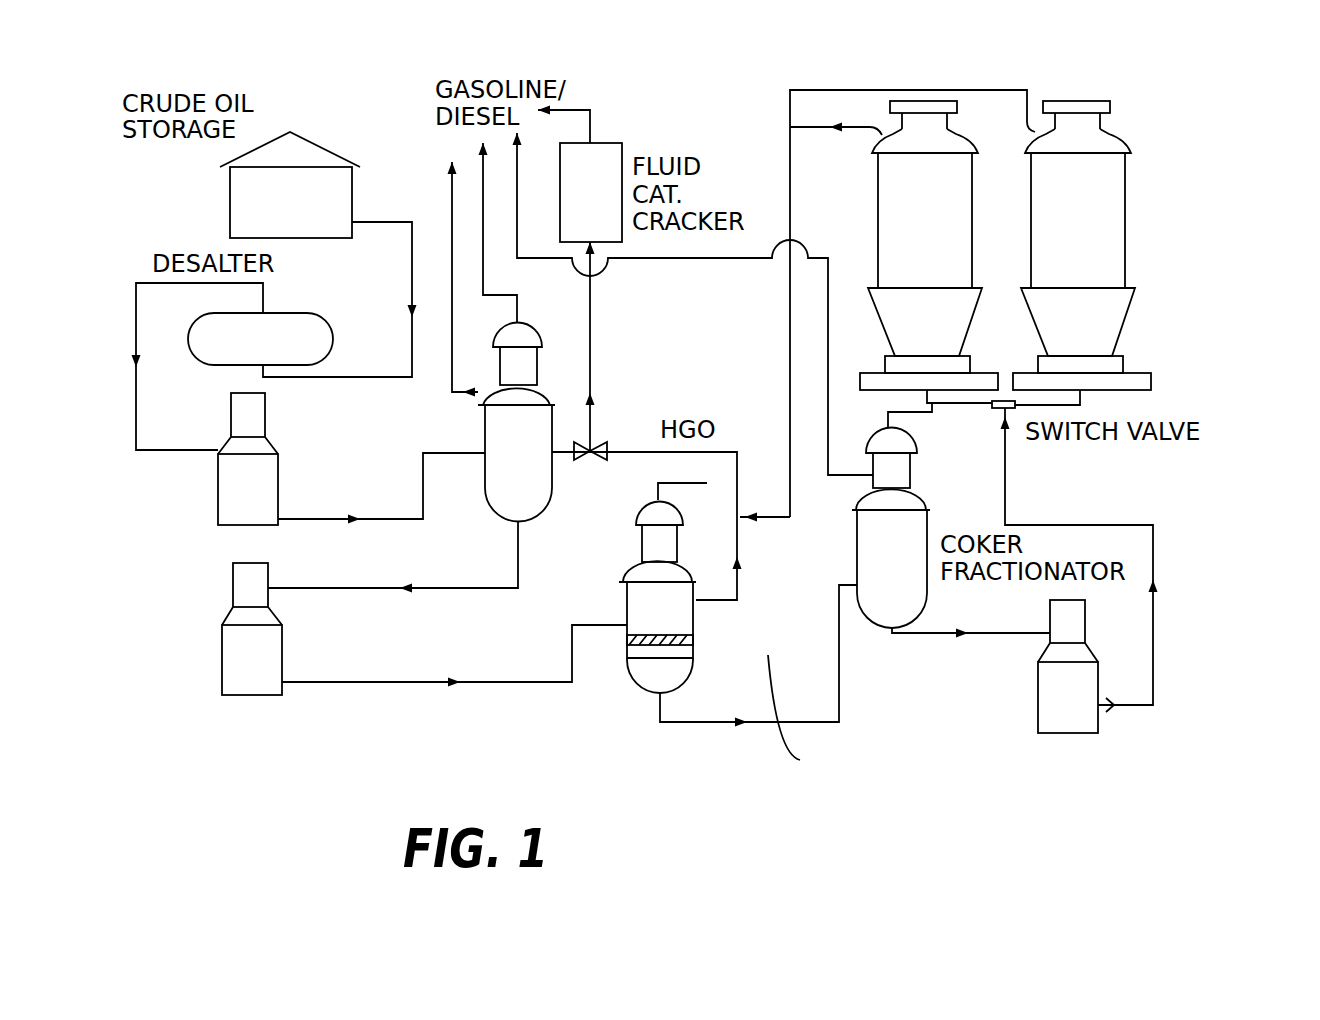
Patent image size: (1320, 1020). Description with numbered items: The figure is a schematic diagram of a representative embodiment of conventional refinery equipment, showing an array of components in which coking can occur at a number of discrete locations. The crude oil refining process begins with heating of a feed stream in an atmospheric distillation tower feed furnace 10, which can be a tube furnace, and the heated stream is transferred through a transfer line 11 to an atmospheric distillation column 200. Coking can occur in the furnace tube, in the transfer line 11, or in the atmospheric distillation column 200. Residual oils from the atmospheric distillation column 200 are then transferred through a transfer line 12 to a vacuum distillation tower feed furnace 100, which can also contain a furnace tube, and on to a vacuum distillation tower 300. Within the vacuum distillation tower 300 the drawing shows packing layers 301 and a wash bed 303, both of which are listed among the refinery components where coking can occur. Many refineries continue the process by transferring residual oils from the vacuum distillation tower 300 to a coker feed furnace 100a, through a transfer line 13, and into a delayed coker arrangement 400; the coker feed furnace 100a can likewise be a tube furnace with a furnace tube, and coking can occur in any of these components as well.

The atmospheric distillation tower feed furnace 10 is at (210, 490).
The transfer line 11 is at (400, 534).
The vacuum distillation tower feed furnace 100 is at (202, 633).
The transfer line 12 is at (382, 685).
The atmospheric distillation column 200 is at (555, 529).
The vacuum distillation tower 300 is at (747, 640).
The packing layers 301 is at (694, 640).
The wash bed 303 is at (623, 650).
The delayed coker arrangement 400 is at (985, 143).
The coker feed furnace 100a is at (1026, 720).
The transfer line 13 is at (1153, 552).